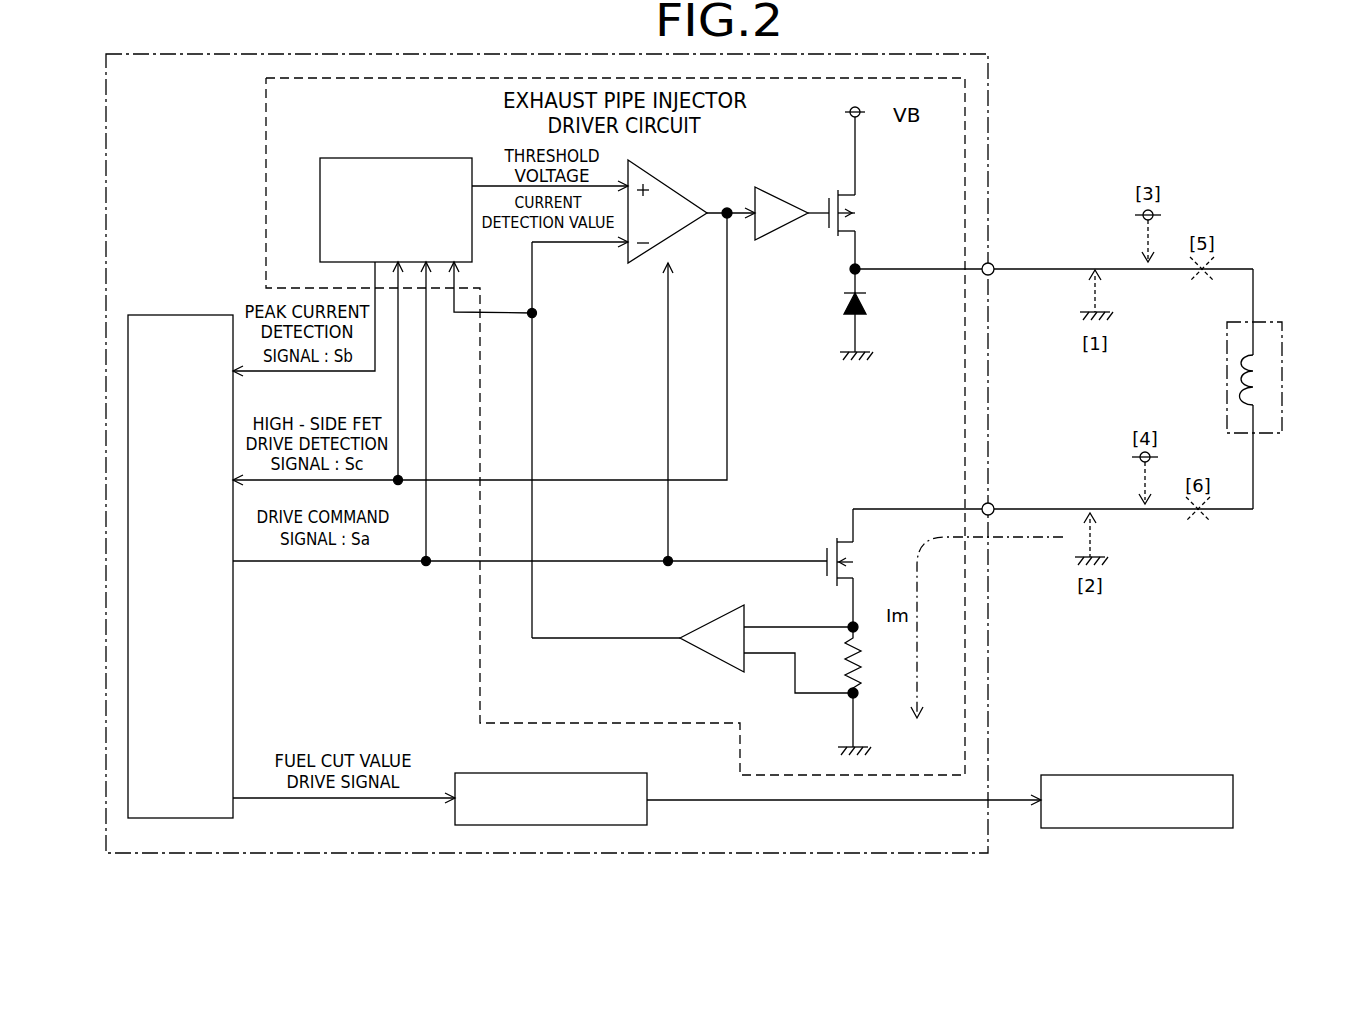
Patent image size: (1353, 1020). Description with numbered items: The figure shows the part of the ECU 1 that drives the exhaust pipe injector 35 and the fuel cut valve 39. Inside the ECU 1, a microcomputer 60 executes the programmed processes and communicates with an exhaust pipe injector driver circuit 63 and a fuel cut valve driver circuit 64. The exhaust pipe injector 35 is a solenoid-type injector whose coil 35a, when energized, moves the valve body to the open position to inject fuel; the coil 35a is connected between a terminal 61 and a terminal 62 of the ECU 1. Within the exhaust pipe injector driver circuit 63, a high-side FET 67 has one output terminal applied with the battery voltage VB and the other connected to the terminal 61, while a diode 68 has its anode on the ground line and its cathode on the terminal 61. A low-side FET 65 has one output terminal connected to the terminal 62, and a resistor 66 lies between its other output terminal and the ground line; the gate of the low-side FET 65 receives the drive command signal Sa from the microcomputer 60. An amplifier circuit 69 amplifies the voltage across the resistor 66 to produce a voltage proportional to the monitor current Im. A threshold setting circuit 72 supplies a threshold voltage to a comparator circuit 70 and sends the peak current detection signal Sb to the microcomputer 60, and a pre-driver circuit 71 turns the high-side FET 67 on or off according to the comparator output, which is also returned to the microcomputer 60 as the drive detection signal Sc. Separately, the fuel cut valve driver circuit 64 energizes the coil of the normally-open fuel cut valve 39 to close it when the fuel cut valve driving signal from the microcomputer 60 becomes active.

The ECU 1 is at (988, 97).
The exhaust pipe injector driver circuit 63 is at (266, 132).
The microcomputer 60 is at (183, 315).
The threshold setting circuit 72 is at (399, 158).
The comparator circuit 70 is at (676, 190).
The pre-driver circuit 71 is at (784, 201).
The high-side FET 67 is at (862, 213).
The diode 68 is at (868, 305).
The terminal 61 is at (992, 263).
The terminal 62 is at (992, 503).
The exhaust pipe injector 35 is at (1236, 389).
The coil 35a is at (1240, 383).
The low-side FET 65 is at (857, 562).
The resistor 66 is at (860, 668).
The amplifier circuit 69 is at (700, 627).
The fuel cut valve driver circuit 64 is at (553, 773).
The fuel cut valve 39 is at (1133, 775).